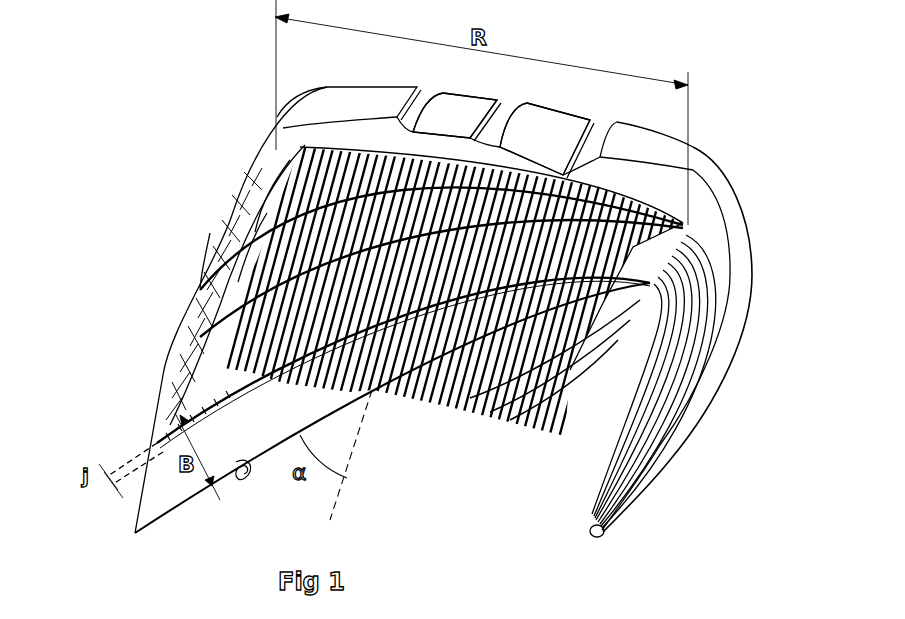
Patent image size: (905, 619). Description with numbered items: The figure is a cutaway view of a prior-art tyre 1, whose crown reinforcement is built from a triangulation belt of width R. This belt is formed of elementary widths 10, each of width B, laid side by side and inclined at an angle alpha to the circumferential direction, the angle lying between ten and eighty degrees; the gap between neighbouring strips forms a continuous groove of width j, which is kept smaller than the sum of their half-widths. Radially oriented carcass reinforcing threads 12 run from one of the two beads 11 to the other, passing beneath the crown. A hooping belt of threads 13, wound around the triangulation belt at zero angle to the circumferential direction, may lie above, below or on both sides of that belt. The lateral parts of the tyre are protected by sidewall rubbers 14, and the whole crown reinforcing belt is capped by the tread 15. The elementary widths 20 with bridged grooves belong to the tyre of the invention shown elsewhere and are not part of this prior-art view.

The tyre 1 is at (726, 116).
The elementary widths 10 is at (290, 160).
The beads 11 is at (246, 476).
The carcass reinforcing threads 12 is at (172, 328).
The threads 13 is at (452, 405).
The sidewall rubbers 14 is at (733, 313).
The tread 15 is at (550, 137).
The elementary widths 20 is at (230, 388).